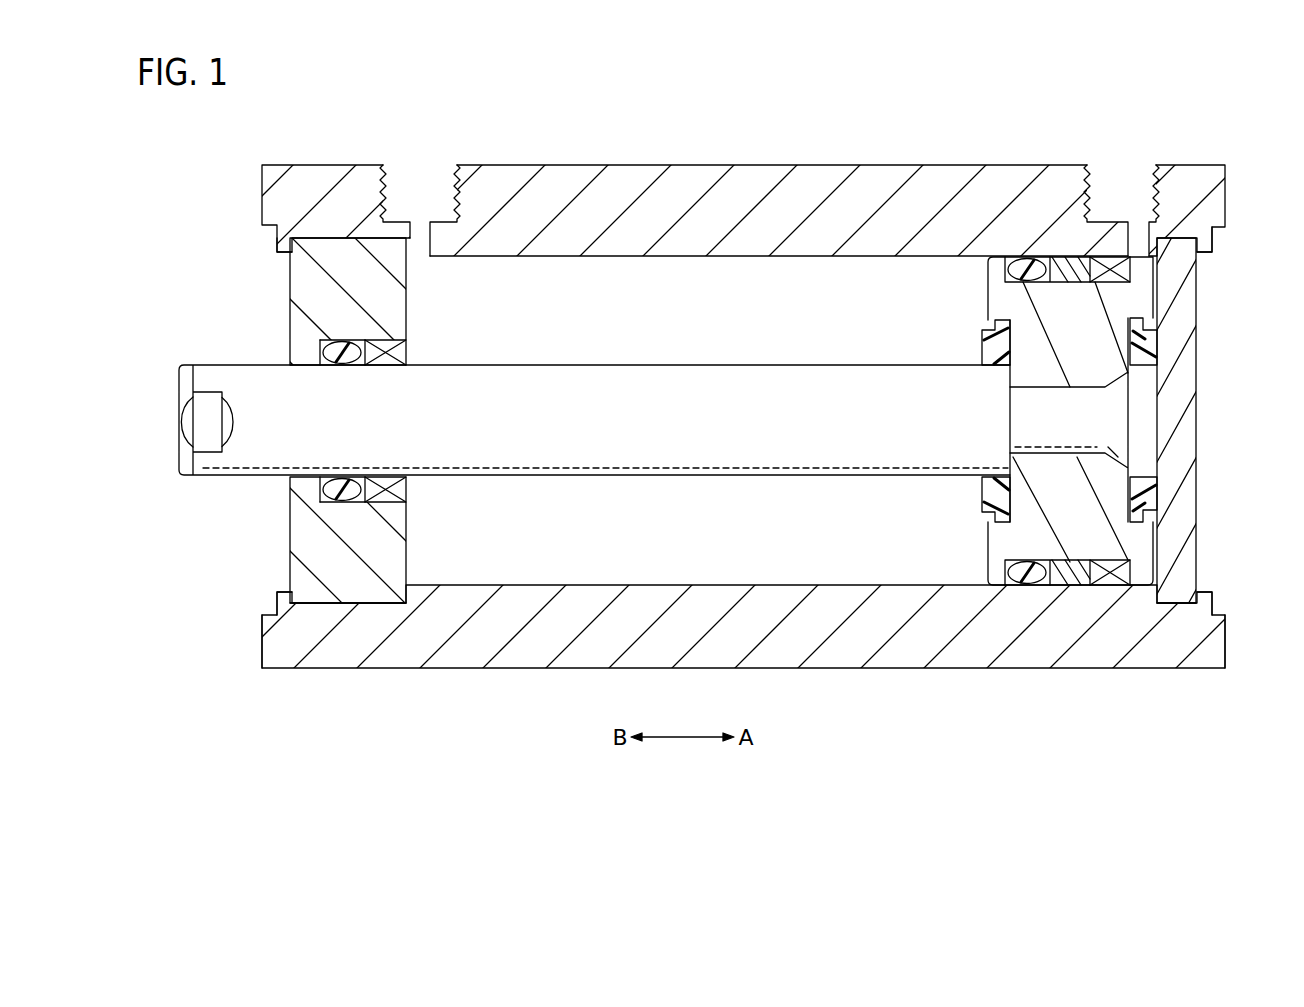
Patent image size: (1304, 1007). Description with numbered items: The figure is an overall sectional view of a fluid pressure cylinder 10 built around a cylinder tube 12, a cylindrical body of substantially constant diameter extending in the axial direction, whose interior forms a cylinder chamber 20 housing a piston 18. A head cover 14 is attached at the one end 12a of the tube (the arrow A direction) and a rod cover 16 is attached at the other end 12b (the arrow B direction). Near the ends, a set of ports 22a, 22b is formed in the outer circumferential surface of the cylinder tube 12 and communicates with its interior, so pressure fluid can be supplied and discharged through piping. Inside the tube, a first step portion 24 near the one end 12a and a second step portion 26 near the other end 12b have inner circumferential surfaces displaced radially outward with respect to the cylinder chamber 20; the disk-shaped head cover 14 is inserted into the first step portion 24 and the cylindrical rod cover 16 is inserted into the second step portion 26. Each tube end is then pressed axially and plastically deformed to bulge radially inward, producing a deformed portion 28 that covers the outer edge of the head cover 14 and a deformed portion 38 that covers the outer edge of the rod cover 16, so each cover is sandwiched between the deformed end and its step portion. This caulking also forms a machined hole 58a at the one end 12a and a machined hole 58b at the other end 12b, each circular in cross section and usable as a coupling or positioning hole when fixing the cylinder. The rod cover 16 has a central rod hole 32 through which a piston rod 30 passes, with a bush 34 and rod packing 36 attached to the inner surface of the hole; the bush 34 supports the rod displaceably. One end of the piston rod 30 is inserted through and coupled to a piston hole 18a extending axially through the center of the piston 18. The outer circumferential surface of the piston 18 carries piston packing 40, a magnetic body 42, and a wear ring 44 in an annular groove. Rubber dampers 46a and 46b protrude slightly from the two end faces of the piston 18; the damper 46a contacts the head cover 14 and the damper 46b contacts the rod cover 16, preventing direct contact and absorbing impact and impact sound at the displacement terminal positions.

The fluid pressure cylinder 10 is at (548, 113).
The cylinder tube 12 is at (688, 163).
The one end 12a is at (1228, 650).
The other end 12b is at (262, 648).
The head cover 14 is at (1201, 400).
The rod cover 16 is at (282, 523).
The piston 18 is at (982, 532).
The piston hole 18a is at (1043, 450).
The cylinder chamber 20 is at (597, 573).
The port 22a is at (1116, 185).
The port 22b is at (416, 185).
The first step portion 24 is at (1178, 606).
The second step portion 26 is at (392, 597).
The deformed portion 28 is at (1207, 598).
The piston rod 30 is at (665, 380).
The rod hole 32 is at (306, 368).
The bush 34 is at (389, 368).
The rod packing 36 is at (345, 368).
The deformed portion 38 is at (282, 246).
The piston packing 40 is at (1016, 576).
The magnetic body 42 is at (1062, 579).
The wear ring 44 is at (1098, 580).
The damper 46a is at (1150, 497).
The damper 46b is at (982, 340).
The machined hole 58a is at (1228, 236).
The machined hole 58b is at (275, 598).